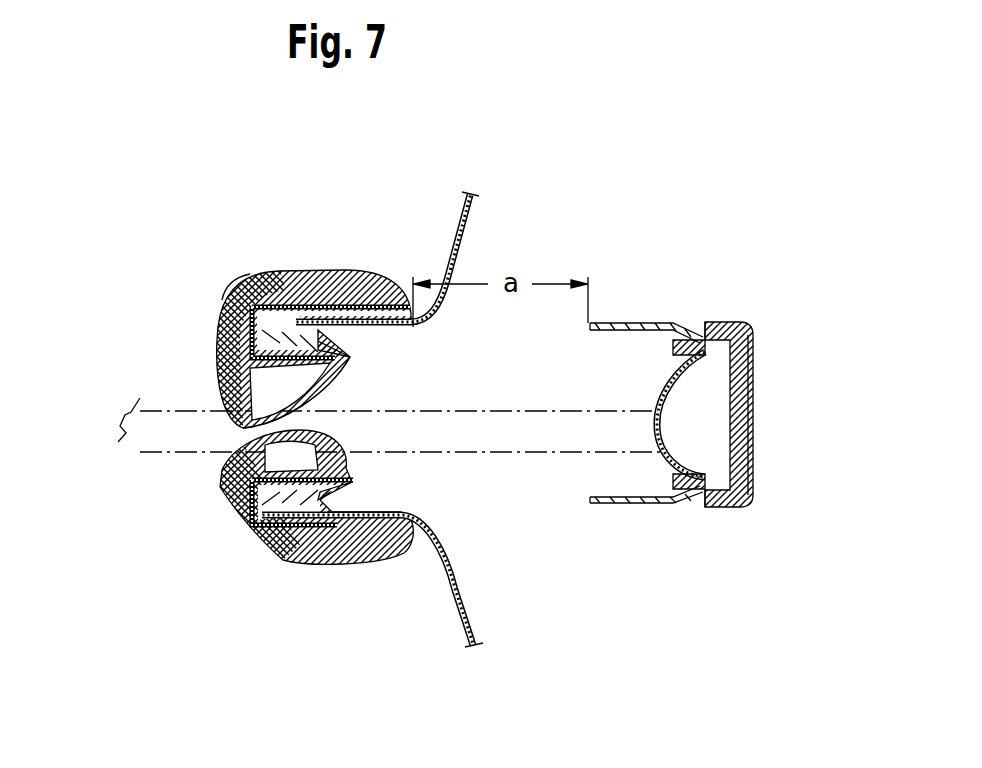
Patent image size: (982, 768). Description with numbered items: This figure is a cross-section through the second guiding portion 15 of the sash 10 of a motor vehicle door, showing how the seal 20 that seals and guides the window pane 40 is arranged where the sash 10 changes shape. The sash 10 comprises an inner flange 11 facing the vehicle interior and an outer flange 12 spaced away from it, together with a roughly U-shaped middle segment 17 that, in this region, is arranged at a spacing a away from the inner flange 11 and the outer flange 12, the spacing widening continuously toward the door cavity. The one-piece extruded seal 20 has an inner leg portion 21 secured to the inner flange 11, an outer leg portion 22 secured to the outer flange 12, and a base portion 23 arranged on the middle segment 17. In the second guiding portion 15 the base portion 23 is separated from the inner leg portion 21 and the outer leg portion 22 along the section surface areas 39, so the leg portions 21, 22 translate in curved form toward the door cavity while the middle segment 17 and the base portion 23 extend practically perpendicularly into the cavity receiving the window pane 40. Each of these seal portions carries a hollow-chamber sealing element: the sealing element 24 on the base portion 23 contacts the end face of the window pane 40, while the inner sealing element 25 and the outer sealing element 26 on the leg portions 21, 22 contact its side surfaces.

The sash 10 is at (479, 211).
The inner flange 11 is at (343, 280).
The outer flange 12 is at (343, 560).
The second guiding portion 15 is at (618, 252).
The middle segment 17 is at (753, 460).
The seal 20 is at (252, 268).
The inner leg portion 21 is at (227, 303).
The outer leg portion 22 is at (243, 540).
The base portion 23 is at (753, 415).
The sealing element 24 is at (710, 387).
The inner sealing element 25 is at (253, 383).
The outer sealing element 26 is at (233, 463).
The section surface areas 39 is at (350, 350).
The window pane 40 is at (118, 380).